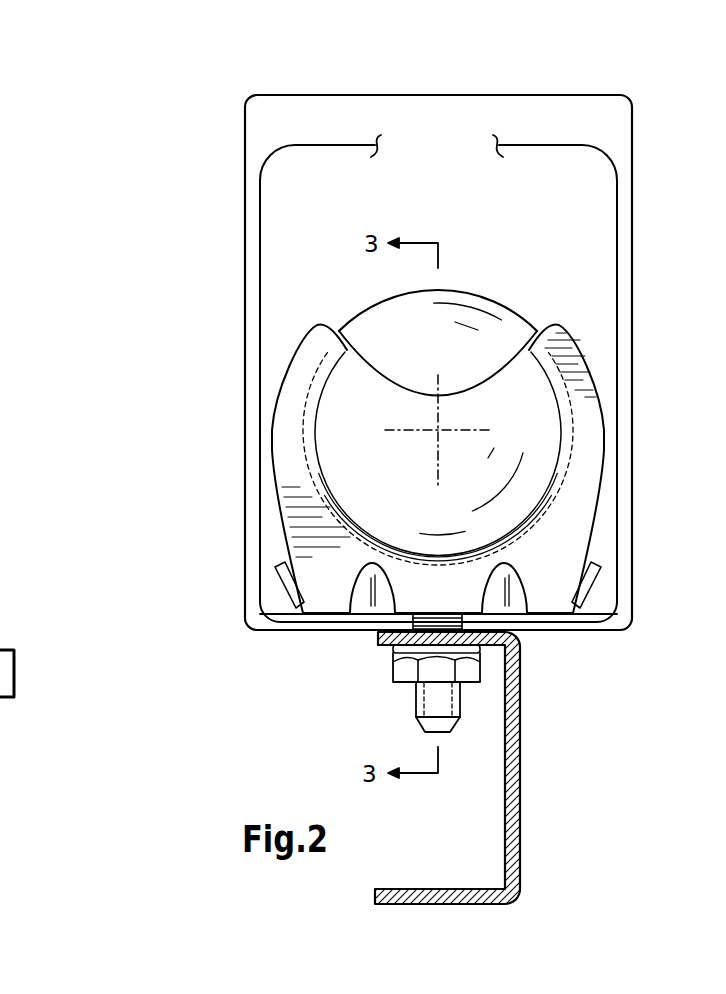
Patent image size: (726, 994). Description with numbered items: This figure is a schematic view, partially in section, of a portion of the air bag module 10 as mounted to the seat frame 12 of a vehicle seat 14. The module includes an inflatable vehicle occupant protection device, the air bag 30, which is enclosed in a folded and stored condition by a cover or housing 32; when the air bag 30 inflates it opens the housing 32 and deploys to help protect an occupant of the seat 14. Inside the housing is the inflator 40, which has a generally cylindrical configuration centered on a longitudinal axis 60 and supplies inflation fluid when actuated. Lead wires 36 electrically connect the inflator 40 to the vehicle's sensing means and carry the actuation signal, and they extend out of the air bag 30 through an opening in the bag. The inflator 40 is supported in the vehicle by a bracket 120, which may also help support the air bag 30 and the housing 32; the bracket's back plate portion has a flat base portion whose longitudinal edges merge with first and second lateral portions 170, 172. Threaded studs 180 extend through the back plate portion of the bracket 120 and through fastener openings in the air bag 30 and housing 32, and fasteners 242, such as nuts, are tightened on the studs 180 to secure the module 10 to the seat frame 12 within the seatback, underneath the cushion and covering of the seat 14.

The air bag module 10 is at (275, 66).
The seat frame 12 is at (518, 695).
The vehicle seat 14 is at (547, 722).
The air bag 30 is at (330, 147).
The housing 32 is at (362, 94).
The lead wires 36 is at (13, 506).
The inflator 40 is at (453, 327).
The longitudinal axis 60 is at (438, 430).
The bracket 120 is at (357, 453).
The first lateral portion 170 is at (282, 574).
The second lateral portion 172 is at (597, 572).
The threaded studs 180 is at (437, 703).
The fasteners 242 is at (427, 668).